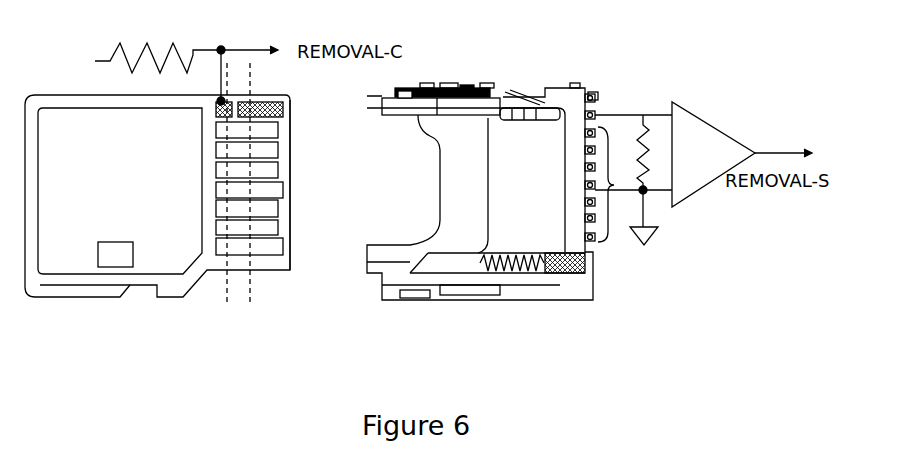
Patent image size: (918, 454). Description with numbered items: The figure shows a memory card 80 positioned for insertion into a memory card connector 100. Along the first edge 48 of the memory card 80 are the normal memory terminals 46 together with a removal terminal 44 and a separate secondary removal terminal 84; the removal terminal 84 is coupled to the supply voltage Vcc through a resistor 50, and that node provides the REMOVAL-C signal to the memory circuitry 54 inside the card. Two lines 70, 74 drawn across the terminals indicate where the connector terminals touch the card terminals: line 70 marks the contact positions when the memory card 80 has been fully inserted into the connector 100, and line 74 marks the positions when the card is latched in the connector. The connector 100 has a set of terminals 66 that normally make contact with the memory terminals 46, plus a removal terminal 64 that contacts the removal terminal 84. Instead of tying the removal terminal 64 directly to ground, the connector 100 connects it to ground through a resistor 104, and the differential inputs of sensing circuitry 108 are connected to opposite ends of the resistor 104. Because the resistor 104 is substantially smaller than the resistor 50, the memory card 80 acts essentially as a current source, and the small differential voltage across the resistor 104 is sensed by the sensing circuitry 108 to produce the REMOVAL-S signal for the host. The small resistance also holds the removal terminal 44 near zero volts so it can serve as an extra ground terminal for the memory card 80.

The resistor 50 is at (147, 47).
The removal terminal 84 is at (220, 100).
The removal terminal 44 is at (272, 102).
The first edge 48 is at (292, 100).
The memory terminals 46 is at (293, 257).
The memory card 80 is at (157, 196).
The memory circuitry 54 is at (115, 254).
The line 70 is at (226, 290).
The line 74 is at (251, 290).
The memory card connector 100 is at (482, 191).
The removal terminal 64 is at (596, 113).
The set of terminals 66 is at (603, 190).
The resistor 104 is at (648, 122).
The sensing circuitry 108 is at (742, 154).